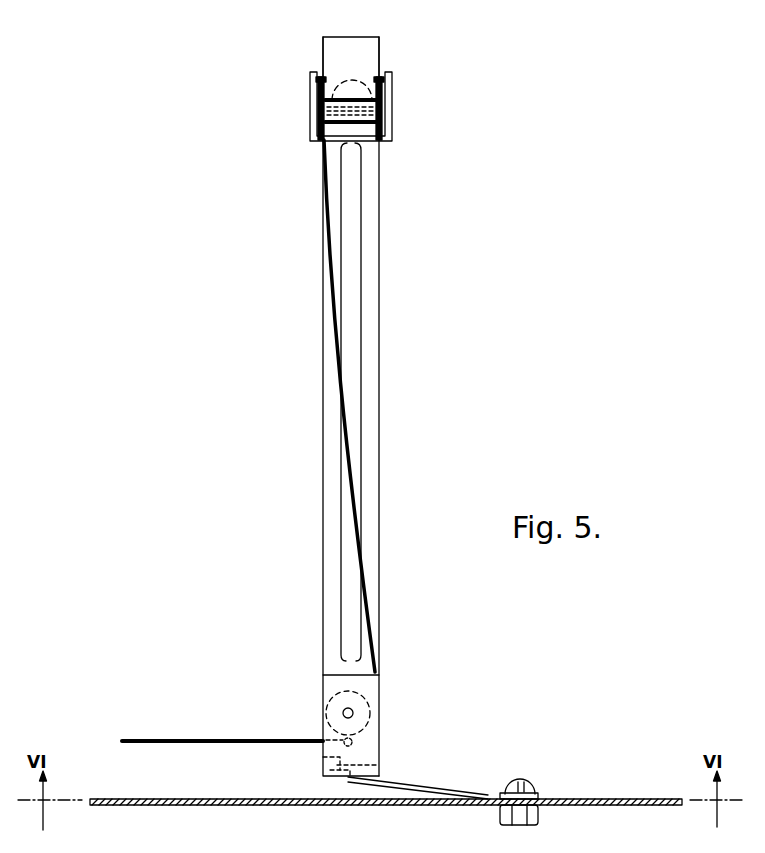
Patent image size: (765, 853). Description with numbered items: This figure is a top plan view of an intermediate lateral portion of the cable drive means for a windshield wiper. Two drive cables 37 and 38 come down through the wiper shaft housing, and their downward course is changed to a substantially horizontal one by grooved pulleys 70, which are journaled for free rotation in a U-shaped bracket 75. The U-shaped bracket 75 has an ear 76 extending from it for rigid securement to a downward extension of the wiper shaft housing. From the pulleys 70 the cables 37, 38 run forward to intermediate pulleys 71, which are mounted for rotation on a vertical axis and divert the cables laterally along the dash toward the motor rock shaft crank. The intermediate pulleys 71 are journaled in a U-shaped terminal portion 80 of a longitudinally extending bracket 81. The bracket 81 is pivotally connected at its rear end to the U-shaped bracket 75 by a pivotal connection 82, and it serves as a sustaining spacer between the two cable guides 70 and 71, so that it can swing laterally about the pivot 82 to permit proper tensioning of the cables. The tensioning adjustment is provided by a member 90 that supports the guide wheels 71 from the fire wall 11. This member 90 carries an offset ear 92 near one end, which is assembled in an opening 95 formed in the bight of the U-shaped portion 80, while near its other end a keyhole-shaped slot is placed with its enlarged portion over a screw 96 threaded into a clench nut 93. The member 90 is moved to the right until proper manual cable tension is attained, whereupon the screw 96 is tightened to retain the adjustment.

The fire wall 11 is at (246, 804).
The cable 37 is at (342, 374).
The cable 38 is at (379, 419).
The grooved pulleys 70 is at (373, 102).
The intermediate pulleys 71 is at (330, 700).
The U-shaped bracket 75 is at (392, 105).
The ear 76 is at (376, 65).
The U-shaped terminal portion 80 is at (366, 752).
The longitudinally extending bracket 81 is at (323, 553).
The pivotal connection 82 is at (347, 124).
The member 90 is at (455, 791).
The offset ear 92 is at (322, 769).
The clench nut 93 is at (518, 815).
The opening 95 is at (340, 778).
The screw 96 is at (523, 787).